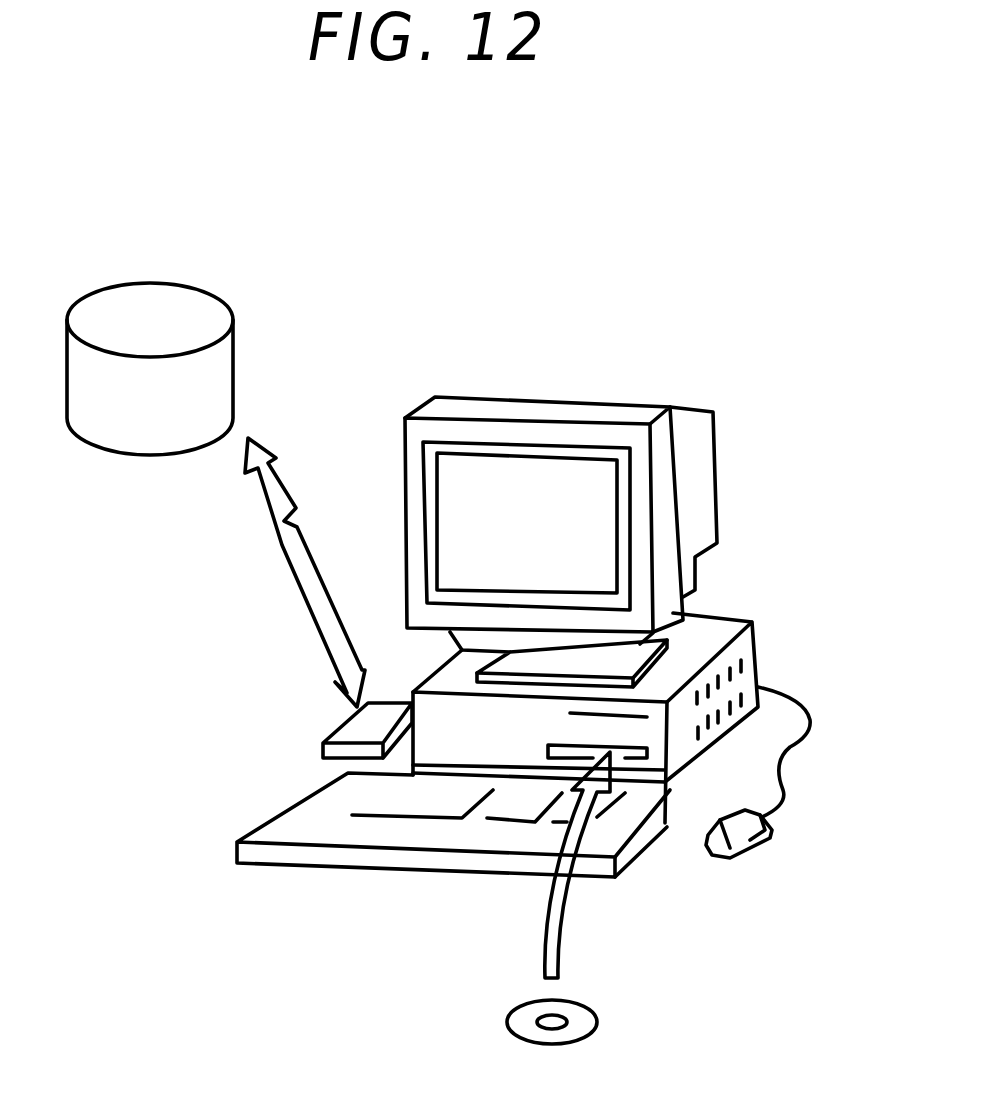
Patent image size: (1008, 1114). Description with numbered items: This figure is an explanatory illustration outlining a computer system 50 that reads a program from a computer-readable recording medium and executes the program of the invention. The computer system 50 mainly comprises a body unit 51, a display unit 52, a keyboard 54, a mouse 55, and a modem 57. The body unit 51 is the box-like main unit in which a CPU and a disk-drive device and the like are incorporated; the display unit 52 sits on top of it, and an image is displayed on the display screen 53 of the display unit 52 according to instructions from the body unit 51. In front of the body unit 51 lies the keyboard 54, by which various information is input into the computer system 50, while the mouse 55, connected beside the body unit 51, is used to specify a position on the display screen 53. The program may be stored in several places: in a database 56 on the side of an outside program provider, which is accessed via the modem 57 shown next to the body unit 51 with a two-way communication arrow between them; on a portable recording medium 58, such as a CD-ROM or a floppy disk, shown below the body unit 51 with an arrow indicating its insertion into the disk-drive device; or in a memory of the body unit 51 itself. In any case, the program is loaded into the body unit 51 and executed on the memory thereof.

The computer system 50 is at (750, 398).
The body unit 51 is at (710, 638).
The display unit 52 is at (618, 412).
The display screen 53 is at (520, 462).
The keyboard 54 is at (273, 828).
The mouse 55 is at (740, 843).
The database 56 is at (100, 290).
The modem 57 is at (337, 727).
The portable recording medium 58 is at (583, 1023).